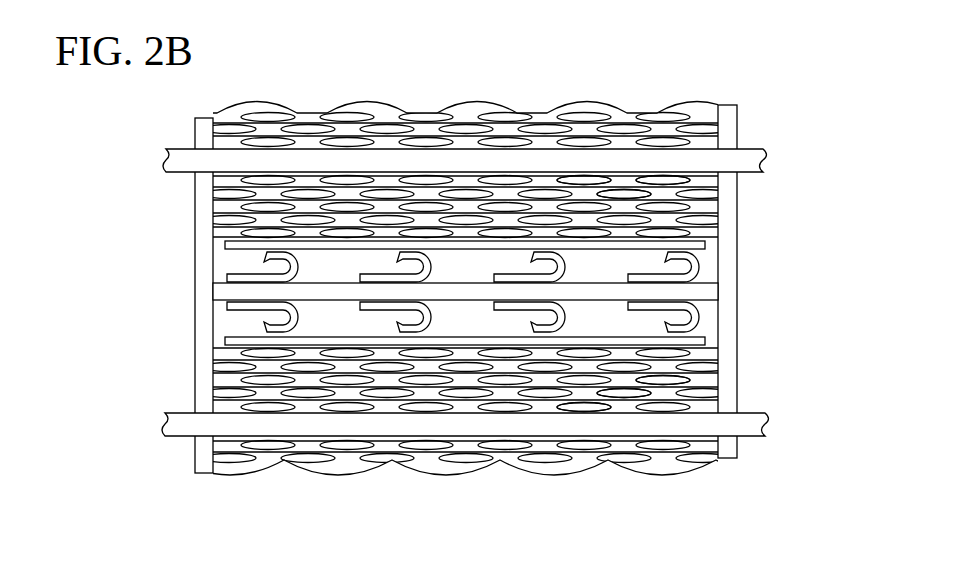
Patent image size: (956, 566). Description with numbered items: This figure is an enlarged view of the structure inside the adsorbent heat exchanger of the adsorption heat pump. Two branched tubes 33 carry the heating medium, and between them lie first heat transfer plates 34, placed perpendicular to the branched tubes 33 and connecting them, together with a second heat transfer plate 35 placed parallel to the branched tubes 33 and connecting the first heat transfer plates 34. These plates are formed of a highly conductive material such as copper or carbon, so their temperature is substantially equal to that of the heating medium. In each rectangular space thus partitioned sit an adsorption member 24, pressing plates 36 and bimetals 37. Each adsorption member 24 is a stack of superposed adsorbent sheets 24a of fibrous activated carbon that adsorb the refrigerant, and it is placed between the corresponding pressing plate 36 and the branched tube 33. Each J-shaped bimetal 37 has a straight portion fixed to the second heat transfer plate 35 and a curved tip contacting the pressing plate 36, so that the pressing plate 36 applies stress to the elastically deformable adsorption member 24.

The adsorption member 24 is at (465, 178).
The adsorbent sheet 24a is at (658, 190).
The branched tube 33 is at (750, 151).
The first heat transfer plate 34 is at (200, 205).
The second heat transfer plate 35 is at (713, 292).
The pressing plate 36 is at (702, 245).
The bimetal 37 is at (300, 265).